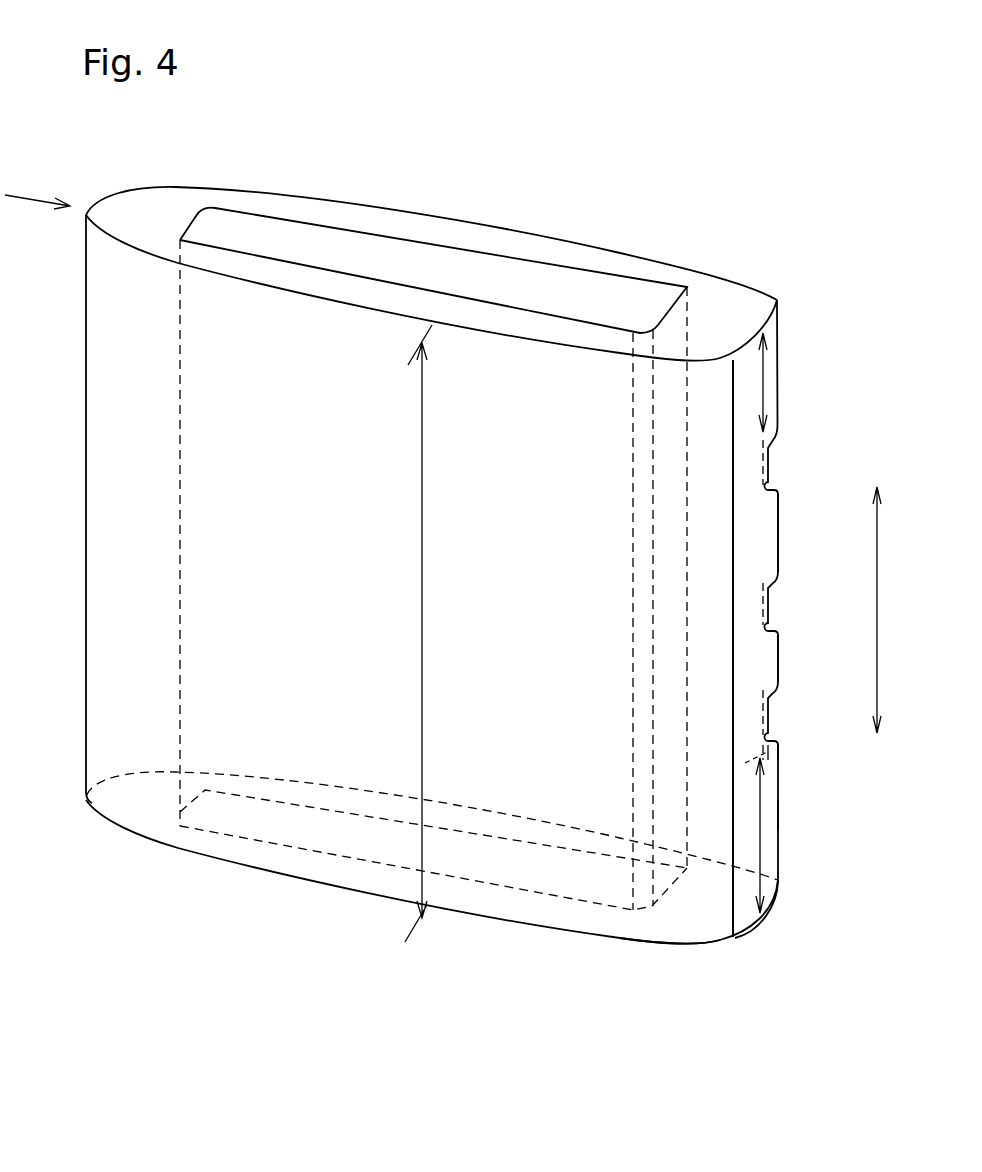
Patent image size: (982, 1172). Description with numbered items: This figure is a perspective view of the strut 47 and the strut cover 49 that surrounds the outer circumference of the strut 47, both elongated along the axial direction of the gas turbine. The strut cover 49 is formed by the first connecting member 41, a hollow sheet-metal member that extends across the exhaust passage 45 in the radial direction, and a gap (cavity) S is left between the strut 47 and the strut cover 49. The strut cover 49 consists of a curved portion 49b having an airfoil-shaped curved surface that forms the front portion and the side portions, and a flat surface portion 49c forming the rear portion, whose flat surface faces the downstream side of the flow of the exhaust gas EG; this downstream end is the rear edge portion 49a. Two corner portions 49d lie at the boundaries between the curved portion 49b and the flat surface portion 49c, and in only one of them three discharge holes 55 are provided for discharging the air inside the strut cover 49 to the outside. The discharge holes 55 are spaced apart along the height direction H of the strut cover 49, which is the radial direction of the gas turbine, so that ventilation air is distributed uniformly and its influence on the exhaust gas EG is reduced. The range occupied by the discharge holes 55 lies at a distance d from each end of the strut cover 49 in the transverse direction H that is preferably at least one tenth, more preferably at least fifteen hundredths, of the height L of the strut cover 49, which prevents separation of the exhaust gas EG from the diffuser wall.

The strut cover 49 is at (86, 569).
The first connecting member 41 is at (52, 509).
The curved portion 49b is at (372, 207).
The strut 47 is at (520, 257).
The rear edge portion 49a is at (712, 797).
The flat surface portion 49c is at (747, 781).
The corner portions 49d is at (780, 818).
The discharge holes 55 is at (770, 705).
The exhaust passage 45 is at (232, 923).
The gap (cavity) S is at (742, 336).
The exhaust gas EG is at (28, 200).
The height of the strut cover L is at (423, 598).
The height direction H is at (880, 607).
The distance d is at (765, 375).